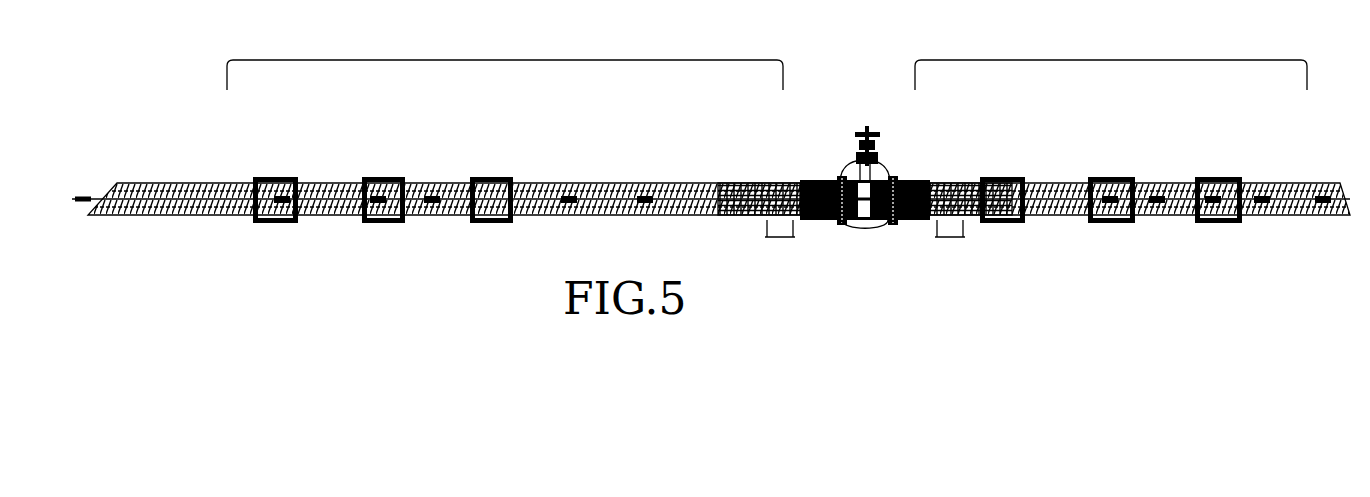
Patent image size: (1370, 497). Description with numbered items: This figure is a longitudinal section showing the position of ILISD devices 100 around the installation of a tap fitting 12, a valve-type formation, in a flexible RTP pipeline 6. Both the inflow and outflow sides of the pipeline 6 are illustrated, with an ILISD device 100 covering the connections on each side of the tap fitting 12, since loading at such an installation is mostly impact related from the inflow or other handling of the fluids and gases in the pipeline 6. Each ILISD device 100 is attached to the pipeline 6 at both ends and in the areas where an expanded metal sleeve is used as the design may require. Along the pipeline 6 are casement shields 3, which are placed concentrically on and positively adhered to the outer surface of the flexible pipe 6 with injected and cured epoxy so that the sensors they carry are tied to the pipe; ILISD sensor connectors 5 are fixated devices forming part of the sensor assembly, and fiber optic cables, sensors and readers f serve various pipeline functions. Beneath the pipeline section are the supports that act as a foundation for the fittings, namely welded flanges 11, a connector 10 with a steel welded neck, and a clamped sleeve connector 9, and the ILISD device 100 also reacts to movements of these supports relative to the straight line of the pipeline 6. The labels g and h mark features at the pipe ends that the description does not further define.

The ILISD device 100 is at (372, 58).
The casement shield 3 is at (733, 155).
The ILISD sensor connectors 5 is at (446, 197).
The flexible RTP pipe 6 is at (243, 184).
The clamped sleeve connector 9 is at (600, 183).
The connector with steel welded neck 10 is at (820, 182).
The welded flanges 11 is at (843, 176).
The tap fitting 12 is at (866, 227).
The fiber optic cables, sensors and readers f is at (498, 201).
The gap g is at (103, 208).
The end h is at (1303, 215).